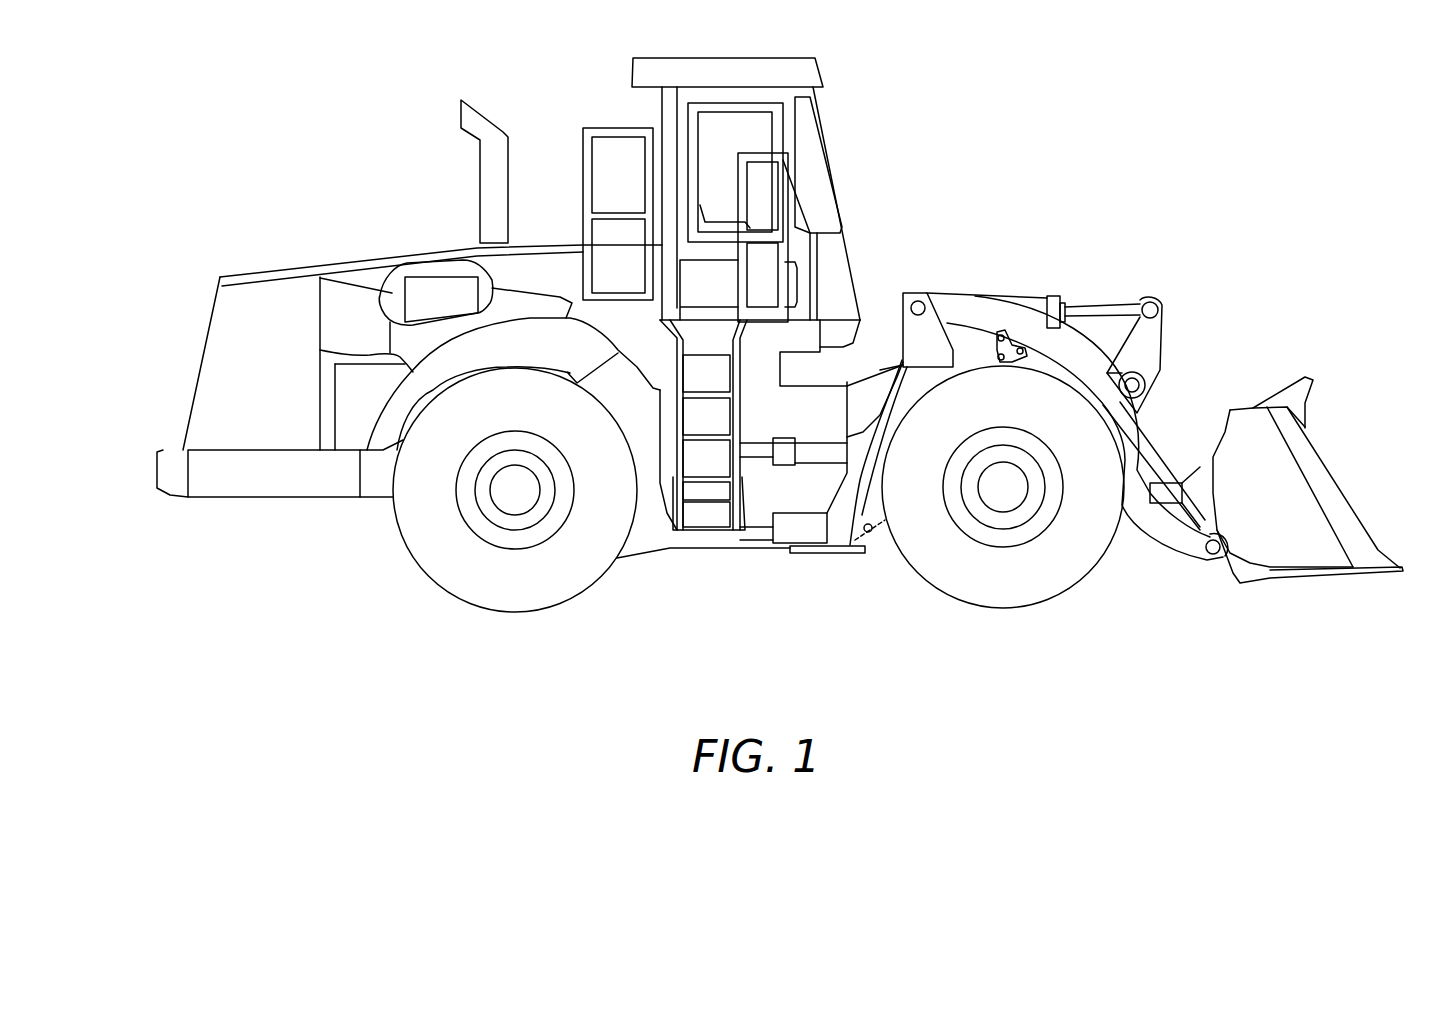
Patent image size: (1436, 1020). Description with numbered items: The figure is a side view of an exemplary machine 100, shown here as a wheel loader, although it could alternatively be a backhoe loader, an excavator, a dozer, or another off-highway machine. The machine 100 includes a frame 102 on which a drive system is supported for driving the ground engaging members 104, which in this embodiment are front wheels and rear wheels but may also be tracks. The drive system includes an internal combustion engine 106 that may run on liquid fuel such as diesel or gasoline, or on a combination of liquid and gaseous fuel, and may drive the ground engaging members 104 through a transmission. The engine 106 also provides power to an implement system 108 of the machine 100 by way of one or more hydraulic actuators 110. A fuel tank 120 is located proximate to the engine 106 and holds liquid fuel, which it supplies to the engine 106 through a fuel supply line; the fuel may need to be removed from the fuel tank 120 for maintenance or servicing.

The machine 100 is at (903, 85).
The frame 102 is at (403, 253).
The ground engaging members 104 is at (498, 613).
The internal combustion engine 106 is at (402, 290).
The implement system 108 is at (1153, 276).
The hydraulic actuators 110 is at (1027, 297).
The fuel tank 120 is at (323, 377).